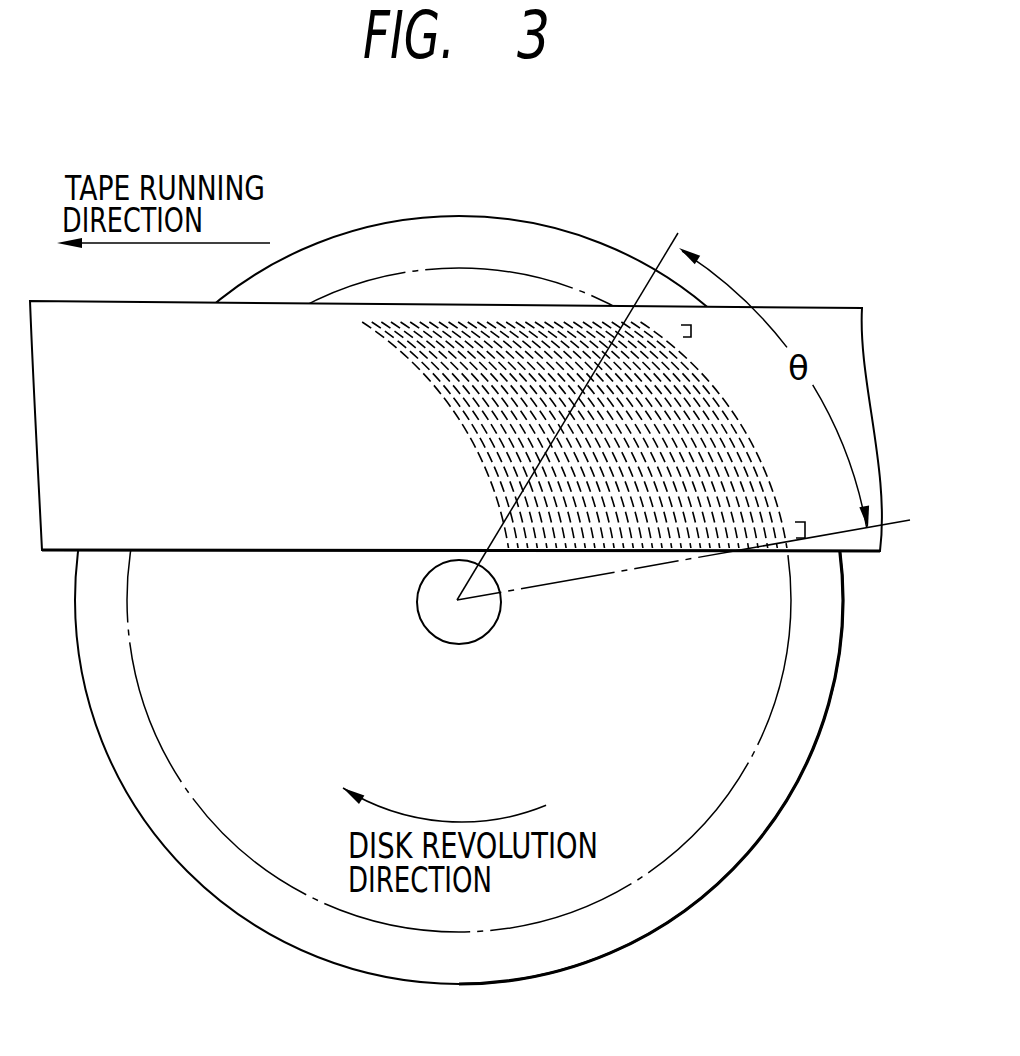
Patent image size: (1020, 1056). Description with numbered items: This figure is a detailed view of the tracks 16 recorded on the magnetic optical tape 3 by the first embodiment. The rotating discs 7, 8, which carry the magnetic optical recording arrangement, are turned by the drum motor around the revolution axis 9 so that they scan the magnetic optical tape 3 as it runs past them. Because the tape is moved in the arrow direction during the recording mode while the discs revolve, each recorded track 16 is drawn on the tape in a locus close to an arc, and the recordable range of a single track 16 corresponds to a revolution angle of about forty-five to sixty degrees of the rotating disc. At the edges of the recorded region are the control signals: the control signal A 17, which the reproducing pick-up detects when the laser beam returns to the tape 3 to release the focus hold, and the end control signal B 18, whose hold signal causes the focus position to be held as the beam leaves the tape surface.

The magnetic optical tape 3 is at (807, 318).
The rotating disc 7 is at (459, 600).
The rotating disc 8 is at (738, 842).
The revolution axis 9 is at (437, 627).
The track 16 is at (641, 317).
The control signal A 17 is at (692, 330).
The end control signal B 18 is at (800, 520).